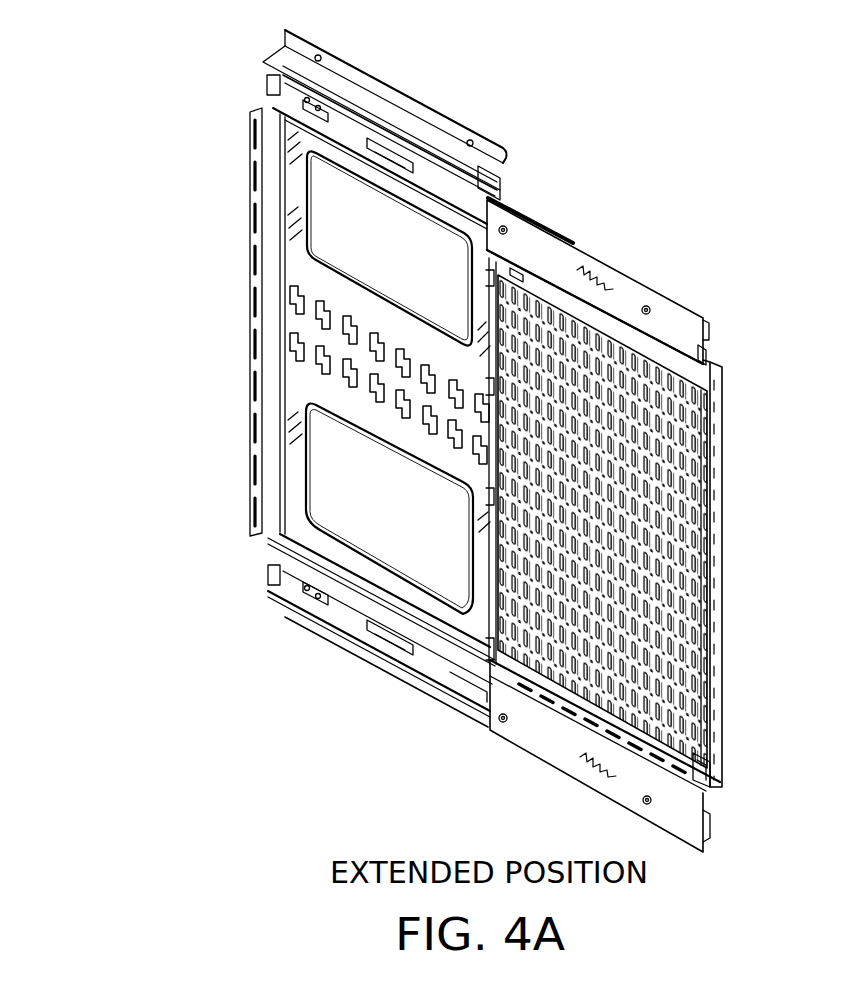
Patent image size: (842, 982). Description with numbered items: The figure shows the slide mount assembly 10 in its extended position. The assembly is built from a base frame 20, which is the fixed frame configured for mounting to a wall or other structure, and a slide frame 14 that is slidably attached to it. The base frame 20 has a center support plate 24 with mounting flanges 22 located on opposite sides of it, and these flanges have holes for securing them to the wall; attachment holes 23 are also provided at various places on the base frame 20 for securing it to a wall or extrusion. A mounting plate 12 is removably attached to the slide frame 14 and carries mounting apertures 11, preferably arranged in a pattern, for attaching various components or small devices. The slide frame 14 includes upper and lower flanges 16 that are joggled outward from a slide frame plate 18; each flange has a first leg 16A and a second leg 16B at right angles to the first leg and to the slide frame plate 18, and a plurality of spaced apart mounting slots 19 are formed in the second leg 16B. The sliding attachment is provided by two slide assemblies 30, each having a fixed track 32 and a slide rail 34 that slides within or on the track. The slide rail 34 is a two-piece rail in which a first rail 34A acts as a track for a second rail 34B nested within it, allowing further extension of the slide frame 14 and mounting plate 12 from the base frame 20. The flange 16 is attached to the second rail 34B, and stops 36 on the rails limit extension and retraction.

The slide mount assembly 10 is at (360, 737).
The mounting apertures 11 is at (698, 598).
The mounting plate 12 is at (698, 540).
The slide frame 14 is at (728, 357).
The upper and lower flanges 16 is at (625, 295).
The first leg 16A is at (684, 820).
The second leg 16B is at (710, 788).
The slide frame plate 18 is at (722, 460).
The mounting apertures or slots 19 is at (660, 772).
The base frame 20 is at (292, 428).
The mounting flange 22 is at (333, 68).
The attachment holes 23 is at (330, 312).
The center support plate 24 is at (298, 384).
The slide assembly 30 is at (443, 127).
The fixed track 32 is at (355, 100).
The slide rail 34 is at (533, 210).
The first rail 34A is at (477, 178).
The second rail 34B is at (710, 330).
The stops 36 is at (268, 84).